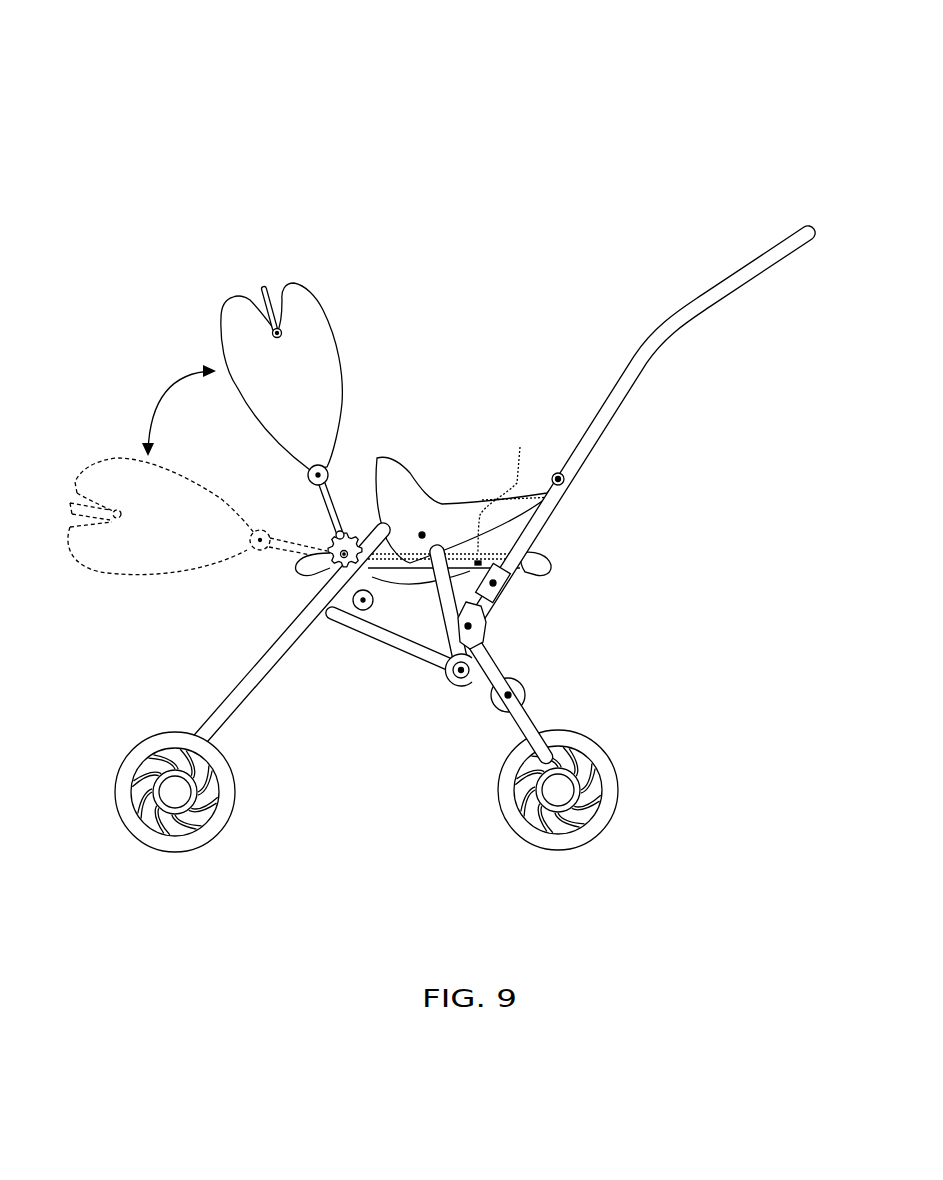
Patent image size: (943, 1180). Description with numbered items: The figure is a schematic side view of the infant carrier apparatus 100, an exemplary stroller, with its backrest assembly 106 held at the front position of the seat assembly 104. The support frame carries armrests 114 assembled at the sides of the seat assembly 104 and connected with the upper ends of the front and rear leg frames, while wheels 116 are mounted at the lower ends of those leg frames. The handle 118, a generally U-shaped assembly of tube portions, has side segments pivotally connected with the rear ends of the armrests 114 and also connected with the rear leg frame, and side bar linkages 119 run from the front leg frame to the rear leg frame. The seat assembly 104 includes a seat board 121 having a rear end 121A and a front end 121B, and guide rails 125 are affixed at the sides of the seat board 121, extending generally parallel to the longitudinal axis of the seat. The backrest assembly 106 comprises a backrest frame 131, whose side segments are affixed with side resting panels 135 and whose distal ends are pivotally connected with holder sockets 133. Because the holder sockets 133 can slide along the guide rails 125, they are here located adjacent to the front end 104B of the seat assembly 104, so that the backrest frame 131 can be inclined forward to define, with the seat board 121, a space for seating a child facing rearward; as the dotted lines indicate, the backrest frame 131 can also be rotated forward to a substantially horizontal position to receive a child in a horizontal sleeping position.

The infant carrier apparatus 100 is at (181, 78).
The seat assembly 104 is at (547, 591).
The front end of the seat assembly 104B is at (290, 534).
The backrest assembly 106 is at (335, 269).
The armrests 114 is at (467, 510).
The wheels 116 is at (228, 798).
The handle 118 is at (747, 278).
The side bar linkages 119 is at (390, 628).
The seat board 121 is at (508, 487).
The rear end of the seat board 121A is at (550, 561).
The front end of the seat board 121B is at (313, 556).
The guide rails 125 is at (428, 570).
The backrest frame 131 is at (265, 288).
The holder sockets 133 is at (337, 562).
The side resting panels 135 is at (318, 348).